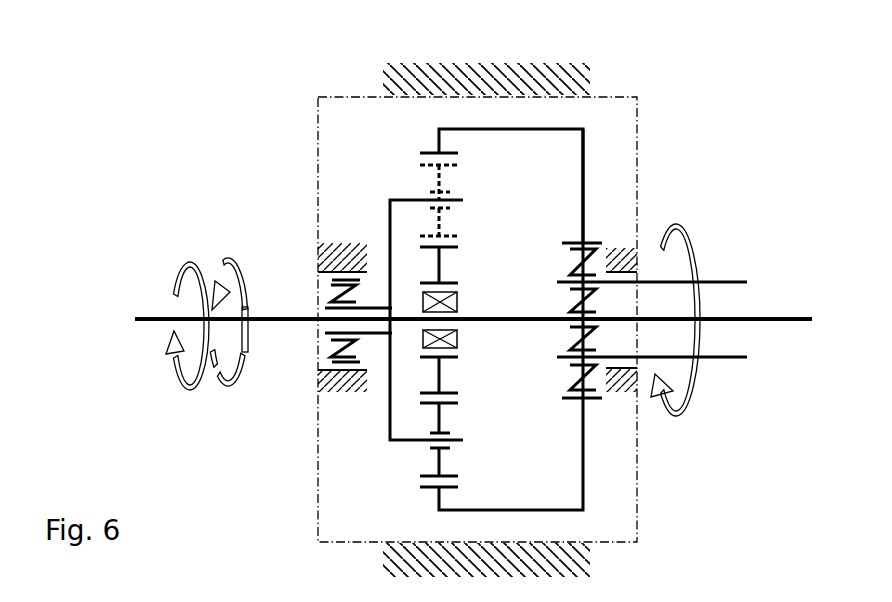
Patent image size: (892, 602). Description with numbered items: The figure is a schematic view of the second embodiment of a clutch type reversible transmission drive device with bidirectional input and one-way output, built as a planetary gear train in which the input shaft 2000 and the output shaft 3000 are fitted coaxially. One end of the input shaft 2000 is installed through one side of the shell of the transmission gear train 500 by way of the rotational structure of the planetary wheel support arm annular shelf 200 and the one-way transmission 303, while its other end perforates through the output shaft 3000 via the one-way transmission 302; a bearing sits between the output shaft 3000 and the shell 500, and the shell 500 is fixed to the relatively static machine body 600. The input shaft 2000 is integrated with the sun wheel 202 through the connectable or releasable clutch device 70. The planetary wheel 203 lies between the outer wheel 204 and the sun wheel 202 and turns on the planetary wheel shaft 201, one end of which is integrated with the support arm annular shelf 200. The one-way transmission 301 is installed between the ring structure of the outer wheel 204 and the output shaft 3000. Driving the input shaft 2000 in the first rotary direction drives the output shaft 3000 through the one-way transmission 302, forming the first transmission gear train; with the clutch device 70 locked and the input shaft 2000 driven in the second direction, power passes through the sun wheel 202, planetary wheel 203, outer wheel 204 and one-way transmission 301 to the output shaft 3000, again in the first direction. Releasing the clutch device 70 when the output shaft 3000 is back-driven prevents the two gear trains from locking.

The connectable or releasable clutch device 70 is at (457, 302).
The planetary wheel support arm annular shelf 200 is at (390, 407).
The planetary wheel shaft 201 is at (457, 445).
The sun wheel 202 is at (458, 393).
The planetary wheel 203 is at (437, 180).
The outer wheel 204 is at (440, 487).
The one-way transmission 301 is at (572, 263).
The one-way transmission 302 is at (570, 348).
The one-way transmission 303 is at (330, 290).
The shell of the transmission gear train 500 is at (318, 155).
The machine body 600 is at (490, 86).
The input shaft 2000 is at (160, 318).
The output shaft 3000 is at (718, 280).